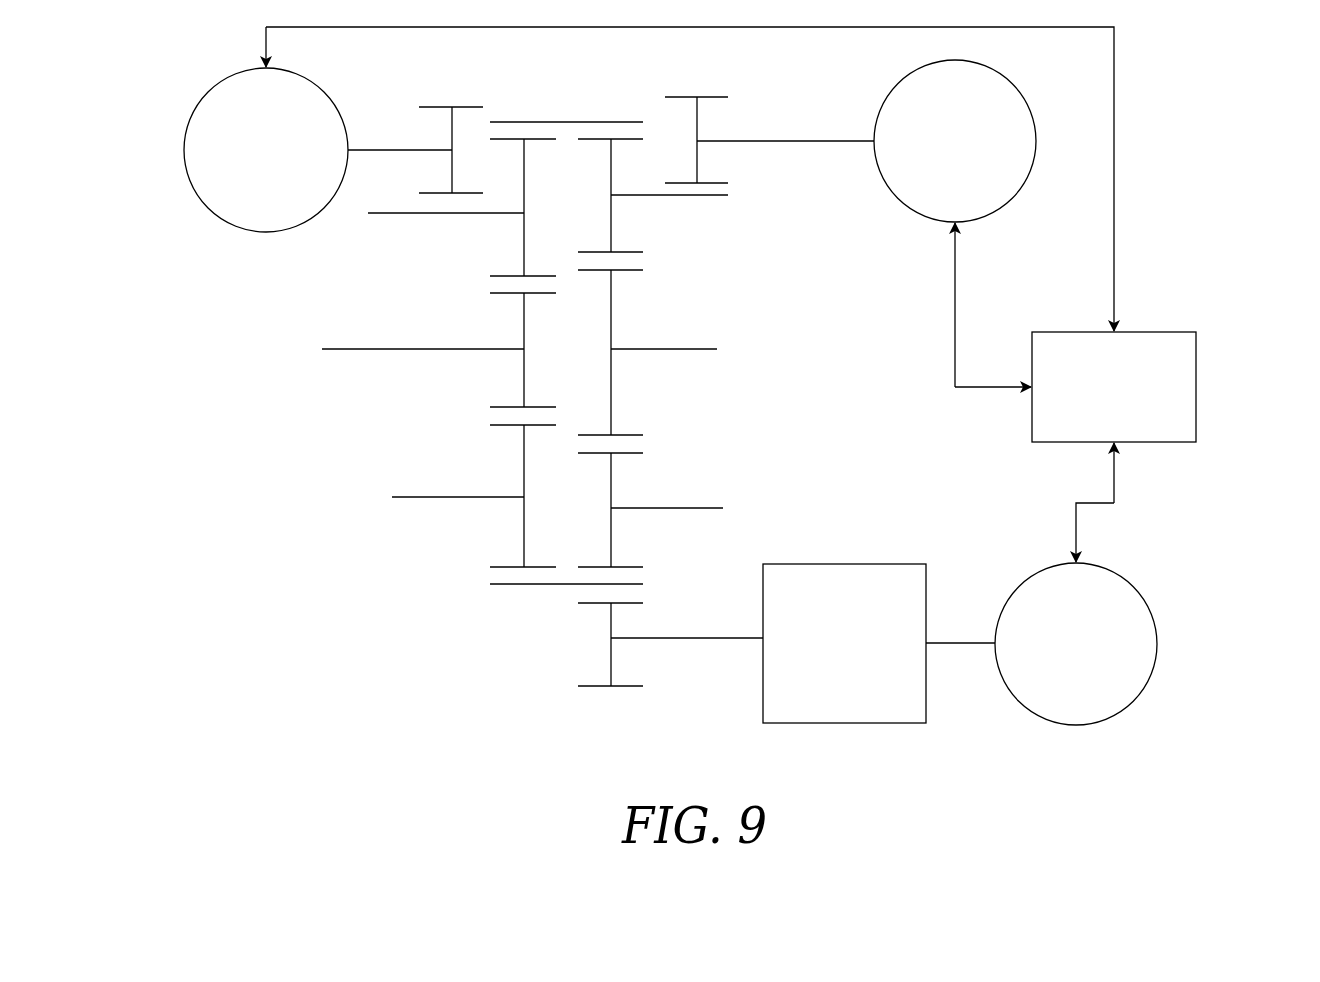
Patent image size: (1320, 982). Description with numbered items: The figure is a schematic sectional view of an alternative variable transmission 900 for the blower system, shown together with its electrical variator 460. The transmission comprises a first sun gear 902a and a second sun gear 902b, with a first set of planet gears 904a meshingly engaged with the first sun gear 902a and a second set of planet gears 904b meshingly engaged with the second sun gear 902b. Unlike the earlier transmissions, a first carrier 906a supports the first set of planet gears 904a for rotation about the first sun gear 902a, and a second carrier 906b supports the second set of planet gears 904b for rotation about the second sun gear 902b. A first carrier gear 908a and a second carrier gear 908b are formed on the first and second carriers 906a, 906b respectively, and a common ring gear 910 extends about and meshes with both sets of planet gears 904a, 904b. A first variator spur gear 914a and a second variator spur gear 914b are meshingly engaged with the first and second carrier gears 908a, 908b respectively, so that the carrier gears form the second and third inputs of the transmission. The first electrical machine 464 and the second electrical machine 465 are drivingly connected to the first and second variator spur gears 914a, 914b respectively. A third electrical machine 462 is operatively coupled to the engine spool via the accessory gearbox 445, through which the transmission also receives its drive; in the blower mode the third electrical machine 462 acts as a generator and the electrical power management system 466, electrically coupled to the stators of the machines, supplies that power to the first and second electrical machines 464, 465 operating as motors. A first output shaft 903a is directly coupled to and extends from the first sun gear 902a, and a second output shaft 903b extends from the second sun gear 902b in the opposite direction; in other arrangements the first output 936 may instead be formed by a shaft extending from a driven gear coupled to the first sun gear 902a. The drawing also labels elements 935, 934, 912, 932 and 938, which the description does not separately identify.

The variable transmission 900 is at (262, 313).
The electrical variator 460 is at (1193, 217).
The second electrical machine 465 is at (190, 120).
The first electrical machine 464 is at (955, 60).
The third electrical machine 462 is at (1152, 610).
The accessory gearbox 445 is at (844, 643).
The electrical power management system 466 is at (1114, 387).
The shaft of first electric machine 935 is at (377, 150).
The second variator spur gear 914b is at (437, 105).
The second carrier gear 908b is at (420, 217).
The first variator spur gear 914a is at (687, 96).
The shaft of second electric machine 934 is at (780, 140).
The first carrier gear 908a is at (690, 197).
The second sun gear 902b is at (524, 377).
The second set of planet gears 904b is at (524, 527).
The first sun gear 902a is at (611, 313).
The first set of planet gears 904a is at (611, 473).
The common ring gear 910 is at (560, 628).
The output shaft 932 is at (568, 584).
The input shaft 912 is at (623, 687).
The second ring gear 938 is at (409, 393).
The second output shaft 903b is at (335, 350).
The first output shaft 903a is at (737, 337).
The first output 936 is at (693, 349).
The second carrier 906b is at (425, 497).
The first carrier 906a is at (700, 508).